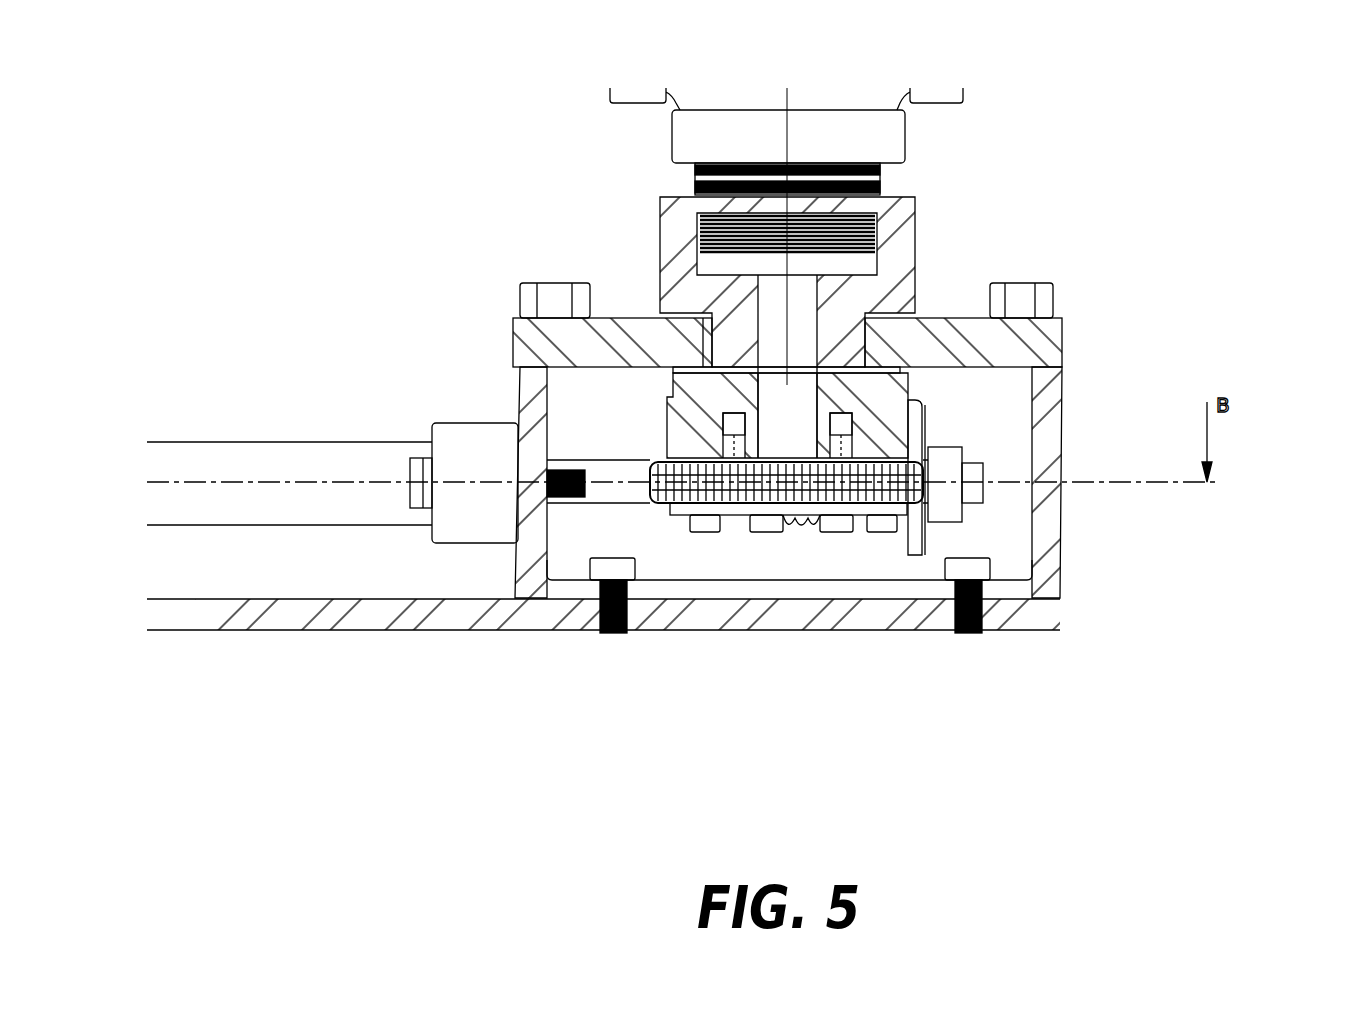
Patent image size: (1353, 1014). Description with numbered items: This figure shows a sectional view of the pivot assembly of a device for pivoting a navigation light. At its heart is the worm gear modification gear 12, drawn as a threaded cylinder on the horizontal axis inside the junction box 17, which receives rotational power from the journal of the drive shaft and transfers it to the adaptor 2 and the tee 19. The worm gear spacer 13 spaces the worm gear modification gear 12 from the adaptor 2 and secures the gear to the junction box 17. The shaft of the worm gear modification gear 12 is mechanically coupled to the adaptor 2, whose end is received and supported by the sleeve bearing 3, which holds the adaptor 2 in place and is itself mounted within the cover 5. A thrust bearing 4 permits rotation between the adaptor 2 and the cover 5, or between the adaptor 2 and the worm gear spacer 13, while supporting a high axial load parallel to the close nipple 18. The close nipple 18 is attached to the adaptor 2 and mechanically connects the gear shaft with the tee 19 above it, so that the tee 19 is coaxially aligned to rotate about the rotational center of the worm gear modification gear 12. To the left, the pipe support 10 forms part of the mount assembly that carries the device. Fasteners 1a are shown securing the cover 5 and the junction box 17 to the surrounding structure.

The fastening bolts 1a is at (1057, 290).
The adaptor 2 is at (912, 268).
The sleeve bearing 3 is at (700, 345).
The thrust bearing 4 is at (698, 343).
The cover 5 is at (1065, 335).
The pipe support 10 is at (440, 415).
The worm gear modification gear 12 is at (862, 516).
The worm gear spacer 13 is at (920, 399).
The junction box 17 is at (1062, 422).
The close nipple 18 is at (690, 178).
The tee 19 is at (850, 137).